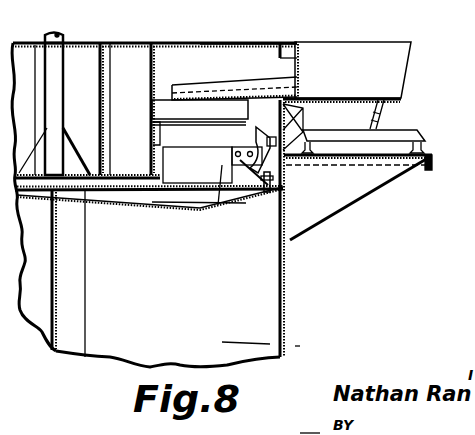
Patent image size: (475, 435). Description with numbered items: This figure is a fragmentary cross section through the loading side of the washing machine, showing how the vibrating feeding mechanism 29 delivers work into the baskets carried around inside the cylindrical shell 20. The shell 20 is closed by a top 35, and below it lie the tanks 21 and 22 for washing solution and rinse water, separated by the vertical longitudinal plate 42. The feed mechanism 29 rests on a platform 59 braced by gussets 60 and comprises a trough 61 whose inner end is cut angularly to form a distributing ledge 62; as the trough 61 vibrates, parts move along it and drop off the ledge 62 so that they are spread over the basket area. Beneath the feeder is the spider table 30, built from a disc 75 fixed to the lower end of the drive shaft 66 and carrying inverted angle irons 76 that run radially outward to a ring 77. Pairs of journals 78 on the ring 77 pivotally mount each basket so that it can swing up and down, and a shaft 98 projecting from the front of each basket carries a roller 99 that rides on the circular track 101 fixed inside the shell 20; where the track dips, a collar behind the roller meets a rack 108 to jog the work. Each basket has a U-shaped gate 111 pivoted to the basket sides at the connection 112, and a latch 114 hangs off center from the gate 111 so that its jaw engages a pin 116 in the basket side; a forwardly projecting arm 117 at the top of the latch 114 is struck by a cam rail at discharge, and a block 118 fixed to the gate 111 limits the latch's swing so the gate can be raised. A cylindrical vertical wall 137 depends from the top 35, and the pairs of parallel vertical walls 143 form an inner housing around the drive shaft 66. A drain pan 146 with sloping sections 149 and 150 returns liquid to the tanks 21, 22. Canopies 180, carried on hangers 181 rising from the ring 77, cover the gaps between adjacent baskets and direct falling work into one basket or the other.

The cylindrical shell 20 is at (284, 303).
The tank 21 is at (309, 349).
The tank 22 is at (30, 257).
The vibrating feeding mechanism 29 is at (374, 80).
The spider table 30 is at (111, 190).
The top 35 is at (218, 43).
The longitudinal plate 42 is at (58, 288).
The platform 59 is at (421, 138).
The gusset 60 is at (343, 199).
The trough 61 is at (246, 97).
The distributing ledge 62 is at (201, 43).
The drive shaft 66 is at (50, 93).
The disc 75 is at (66, 270).
The inverted angle iron 76 is at (133, 190).
The ring 77 is at (163, 196).
The journal 78 is at (160, 165).
The shaft 98 is at (226, 199).
The roller 99 is at (271, 186).
The circular track 101 is at (275, 204).
The rack 108 is at (262, 198).
The gate 111 is at (303, 130).
The pivotal connection 112 is at (235, 155).
The latch 114 is at (268, 142).
The pin 116 is at (234, 157).
The forwardly projecting arm 117 is at (292, 119).
The block 118 is at (308, 145).
The cylindrical vertical wall 137 is at (203, 46).
The vertical wall 143 is at (122, 109).
The drain pan 146 is at (212, 208).
The pan section 149 is at (133, 188).
The pan section 150 is at (221, 168).
The canopy 180 is at (200, 109).
The hanger 181 is at (149, 132).